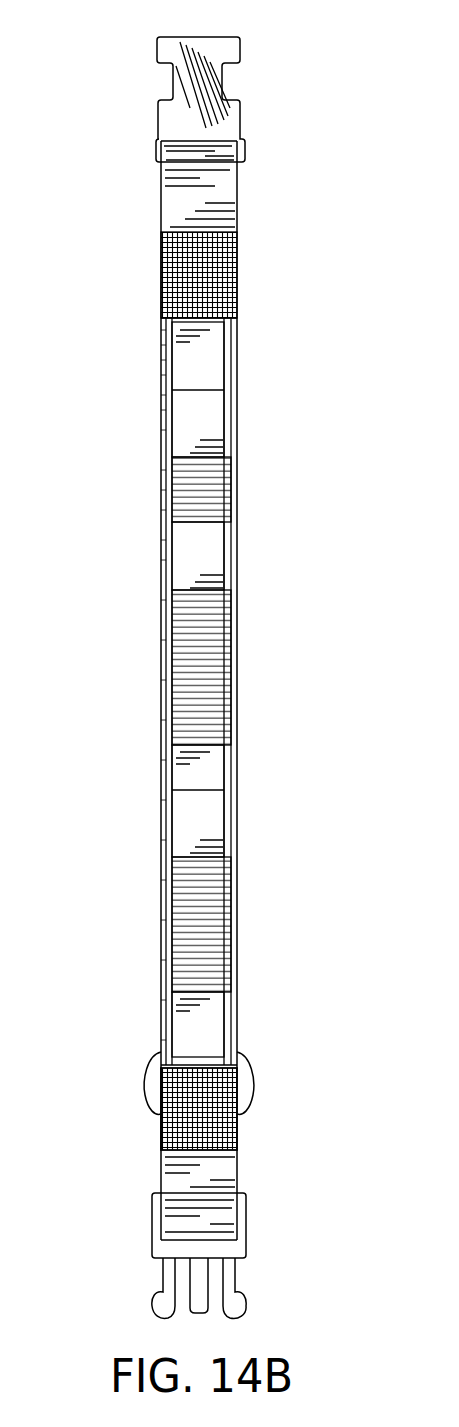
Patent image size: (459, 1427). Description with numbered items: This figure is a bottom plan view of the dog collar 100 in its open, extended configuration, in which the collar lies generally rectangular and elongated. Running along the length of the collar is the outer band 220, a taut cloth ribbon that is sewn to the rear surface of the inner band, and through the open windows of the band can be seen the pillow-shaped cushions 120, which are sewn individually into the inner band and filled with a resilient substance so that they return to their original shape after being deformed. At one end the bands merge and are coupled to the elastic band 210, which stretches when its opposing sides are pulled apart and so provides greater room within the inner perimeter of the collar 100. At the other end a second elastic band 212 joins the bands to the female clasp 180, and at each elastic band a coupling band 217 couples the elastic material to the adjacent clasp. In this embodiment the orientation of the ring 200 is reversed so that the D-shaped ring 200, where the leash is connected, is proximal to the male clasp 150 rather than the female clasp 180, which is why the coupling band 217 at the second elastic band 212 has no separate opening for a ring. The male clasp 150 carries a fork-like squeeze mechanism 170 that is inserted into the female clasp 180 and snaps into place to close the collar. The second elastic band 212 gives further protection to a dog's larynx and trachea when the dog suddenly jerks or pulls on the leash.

The dog collar 100 is at (288, 72).
The female clasp 180 is at (243, 102).
The coupling band 217 is at (237, 196).
The second elastic band 212 is at (237, 293).
The outer band 220 is at (237, 643).
The cushions 120 is at (207, 743).
The elastic band 210 is at (161, 1122).
The ring 200 is at (253, 1098).
The male clasp 150 is at (246, 1230).
The fork-like squeeze mechanism 170 is at (245, 1310).